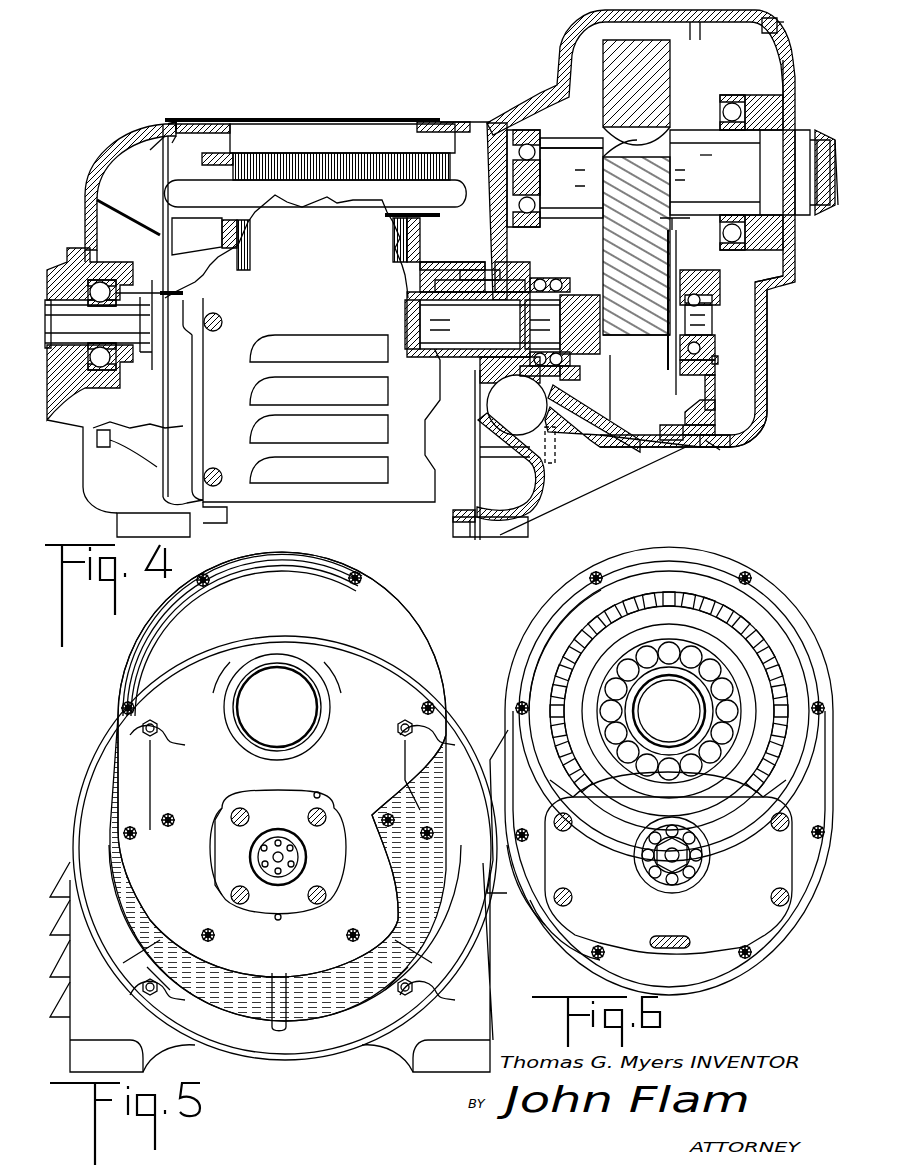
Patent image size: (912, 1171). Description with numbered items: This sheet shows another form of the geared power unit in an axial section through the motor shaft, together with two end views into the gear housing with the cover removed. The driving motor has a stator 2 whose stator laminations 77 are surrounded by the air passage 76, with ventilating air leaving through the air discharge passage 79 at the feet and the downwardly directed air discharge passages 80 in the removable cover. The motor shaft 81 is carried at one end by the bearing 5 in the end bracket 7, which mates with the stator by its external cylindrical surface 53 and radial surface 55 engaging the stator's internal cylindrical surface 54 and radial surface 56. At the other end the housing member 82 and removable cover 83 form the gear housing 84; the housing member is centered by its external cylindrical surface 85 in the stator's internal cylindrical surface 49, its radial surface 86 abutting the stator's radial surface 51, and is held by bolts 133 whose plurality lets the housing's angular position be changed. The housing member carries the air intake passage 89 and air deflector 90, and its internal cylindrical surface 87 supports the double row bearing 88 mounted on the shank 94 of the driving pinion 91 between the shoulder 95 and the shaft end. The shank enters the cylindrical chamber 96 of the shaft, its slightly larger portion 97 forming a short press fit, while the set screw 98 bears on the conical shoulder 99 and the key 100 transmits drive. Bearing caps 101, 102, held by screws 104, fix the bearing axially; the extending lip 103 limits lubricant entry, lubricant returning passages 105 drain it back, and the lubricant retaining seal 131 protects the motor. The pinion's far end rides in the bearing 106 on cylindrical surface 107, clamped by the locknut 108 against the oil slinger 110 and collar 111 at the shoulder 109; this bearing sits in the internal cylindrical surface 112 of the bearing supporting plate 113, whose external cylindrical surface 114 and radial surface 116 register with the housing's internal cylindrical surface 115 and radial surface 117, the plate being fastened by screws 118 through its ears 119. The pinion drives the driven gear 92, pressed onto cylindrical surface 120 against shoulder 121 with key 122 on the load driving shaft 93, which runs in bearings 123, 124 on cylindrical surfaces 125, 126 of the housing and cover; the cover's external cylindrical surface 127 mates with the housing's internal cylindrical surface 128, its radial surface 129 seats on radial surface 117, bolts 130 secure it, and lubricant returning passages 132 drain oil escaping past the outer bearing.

In FIG. 4, the stator 2 is at (423, 120).
In FIG. 5, the stator 2 is at (170, 1050).
In FIG. 4, the bearing 5 is at (103, 385).
In FIG. 4, the end bracket 7 is at (105, 145).
In FIG. 4, the internal cylindrical surface 49 is at (470, 537).
In FIG. 4, the radial surface 51 is at (460, 522).
In FIG. 4, the external cylindrical surface 53 is at (158, 140).
In FIG. 4, the internal cylindrical surface 54 is at (170, 124).
In FIG. 4, the radial surface 55 is at (172, 140).
In FIG. 4, the radial surface 56 is at (186, 124).
In FIG. 4, the air passage 76 is at (265, 124).
In FIG. 4, the stator laminations 77 is at (286, 153).
In FIG. 4, the air discharge passage 79 is at (282, 504).
In FIG. 4, the air discharge passages 80 is at (250, 368).
In FIG. 5, the air discharge passages 80 is at (70, 875).
In FIG. 4, the motor shaft 81 is at (407, 296).
In FIG. 4, the housing member 82 is at (560, 48).
In FIG. 5, the housing member 82 is at (410, 605).
In FIG. 6, the housing member 82 is at (550, 596).
In FIG. 4, the removable cover 83 is at (767, 356).
In FIG. 4, the gear housing 84 is at (640, 395).
In FIG. 4, the external cylindrical surface 85 is at (485, 500).
In FIG. 4, the radial surface 86 is at (470, 510).
In FIG. 4, the internal cylindrical surface 87 is at (525, 383).
In FIG. 4, the bearing 88 is at (560, 280).
In FIG. 4, the air intake passage 89 is at (560, 432).
In FIG. 5, the air intake passage 89 is at (238, 1002).
In FIG. 4, the air deflector 90 is at (505, 440).
In FIG. 4, the driving pinion 91 is at (630, 336).
In FIG. 5, the driving pinion 91 is at (270, 855).
In FIG. 4, the driven gear 92 is at (603, 187).
In FIG. 6, the driven gear 92 is at (560, 660).
In FIG. 4, the load driving shaft 93 is at (803, 130).
In FIG. 6, the load driving shaft 93 is at (690, 690).
In FIG. 4, the shank 94 is at (575, 300).
In FIG. 4, the shoulder 95 is at (570, 350).
In FIG. 4, the cylindrical chamber 96 is at (405, 322).
In FIG. 4, the portion 97 is at (525, 324).
In FIG. 4, the set screw 98 is at (485, 383).
In FIG. 4, the conical shoulder 99 is at (500, 330).
In FIG. 4, the key 100 is at (468, 280).
In FIG. 4, the bearing cap 101 is at (470, 262).
In FIG. 4, the bearing cap 102 is at (565, 378).
In FIG. 5, the bearing cap 102 is at (258, 905).
In FIG. 4, the extending lip 103 is at (572, 366).
In FIG. 4, the screws 104 is at (545, 262).
In FIG. 5, the screws 104 is at (328, 815).
In FIG. 4, the lubricant returning passages 105 is at (572, 398).
In FIG. 5, the lubricant returning passages 105 is at (340, 855).
In FIG. 4, the bearing 106 is at (715, 350).
In FIG. 6, the bearing 106 is at (700, 836).
In FIG. 4, the cylindrical surface 107 is at (712, 325).
In FIG. 5, the cylindrical surface 107 is at (266, 862).
In FIG. 4, the locknut 108 is at (712, 303).
In FIG. 6, the locknut 108 is at (660, 862).
In FIG. 4, the shoulder 109 is at (667, 336).
In FIG. 4, the oil slinger 110 is at (680, 240).
In FIG. 6, the oil slinger 110 is at (730, 785).
In FIG. 4, the collar 111 is at (670, 345).
In FIG. 4, the internal cylindrical surface 112 is at (715, 374).
In FIG. 6, the internal cylindrical surface 112 is at (645, 830).
In FIG. 4, the bearing supporting plate 113 is at (715, 392).
In FIG. 6, the bearing supporting plate 113 is at (568, 940).
In FIG. 4, the external cylindrical surface 114 is at (708, 412).
In FIG. 4, the internal cylindrical surface 115 is at (665, 430).
In FIG. 5, the internal cylindrical surface 115 is at (190, 830).
In FIG. 4, the radial surface 116 is at (732, 438).
In FIG. 4, the radial surface 117 is at (680, 447).
In FIG. 5, the radial surface 117 is at (410, 632).
In FIG. 6, the radial surface 117 is at (540, 623).
In FIG. 6, the screws 118 is at (548, 930).
In FIG. 6, the ears 119 is at (530, 898).
In FIG. 4, the cylindrical surface 120 is at (672, 172).
In FIG. 4, the shoulder 121 is at (672, 145).
In FIG. 4, the key 122 is at (603, 104).
In FIG. 4, the bearing 123 is at (603, 150).
In FIG. 6, the bearing 123 is at (720, 638).
In FIG. 4, the bearing 124 is at (760, 112).
In FIG. 6, the bearing 124 is at (670, 632).
In FIG. 4, the cylindrical surface 125 is at (520, 125).
In FIG. 5, the cylindrical surface 125 is at (232, 723).
In FIG. 4, the cylindrical surface 126 is at (770, 70).
In FIG. 4, the external cylindrical surface 127 is at (705, 40).
In FIG. 4, the internal cylindrical surface 128 is at (777, 20).
In FIG. 5, the internal cylindrical surface 128 is at (150, 645).
In FIG. 6, the internal cylindrical surface 128 is at (760, 590).
In FIG. 4, the radial surface 129 is at (722, 450).
In FIG. 4, the bolts 130 is at (778, 28).
In FIG. 4, the lubricant retaining seal 131 is at (470, 272).
In FIG. 4, the lubricant returning passages 132 is at (772, 282).
In FIG. 4, the bolts 133 is at (558, 463).